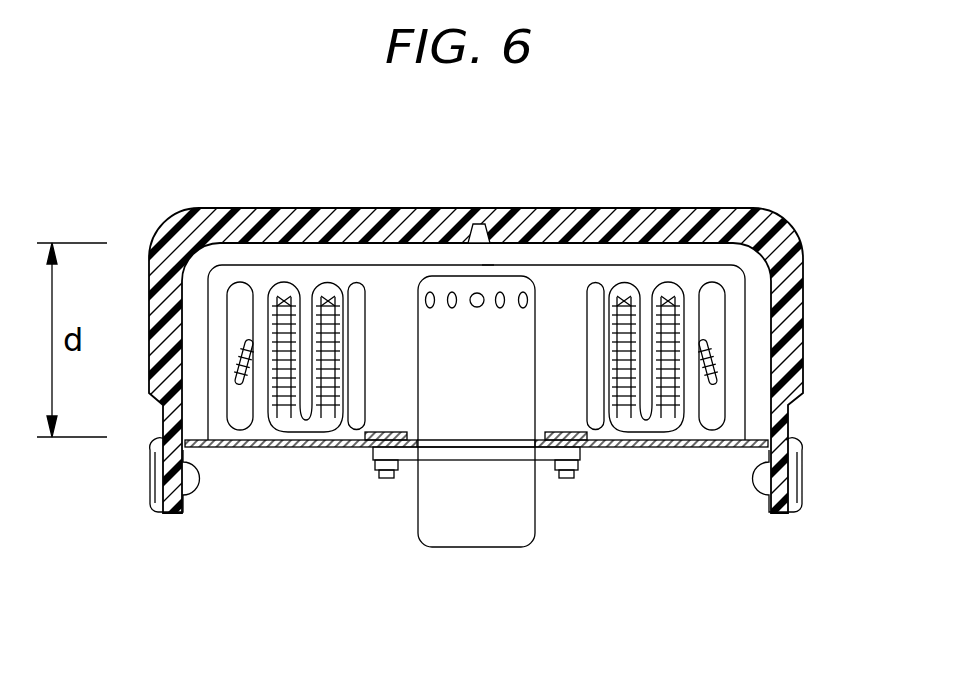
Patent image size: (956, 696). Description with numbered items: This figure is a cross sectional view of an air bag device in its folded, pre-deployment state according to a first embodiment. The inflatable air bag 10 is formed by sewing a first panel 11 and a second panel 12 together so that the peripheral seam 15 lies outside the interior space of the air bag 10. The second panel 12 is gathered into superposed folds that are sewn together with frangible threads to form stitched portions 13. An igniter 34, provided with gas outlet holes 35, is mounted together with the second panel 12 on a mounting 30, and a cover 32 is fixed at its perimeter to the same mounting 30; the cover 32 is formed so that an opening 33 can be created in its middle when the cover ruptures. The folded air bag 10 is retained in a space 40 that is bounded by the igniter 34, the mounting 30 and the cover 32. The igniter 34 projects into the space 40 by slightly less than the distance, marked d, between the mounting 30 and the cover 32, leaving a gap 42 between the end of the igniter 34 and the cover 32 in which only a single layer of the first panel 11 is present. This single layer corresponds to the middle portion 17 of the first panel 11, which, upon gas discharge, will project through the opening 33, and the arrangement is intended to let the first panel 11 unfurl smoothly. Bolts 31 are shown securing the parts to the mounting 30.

The inflatable air bag 10 is at (675, 256).
The first panel 11 is at (718, 268).
The second panel 12 is at (257, 440).
The stitched portions 13 is at (335, 427).
The peripheral seam 15 is at (232, 362).
The middle portion 17 is at (487, 262).
The mounting 30 is at (305, 448).
The bolt 31 is at (388, 480).
The cover 32 is at (572, 212).
The opening 33 is at (478, 222).
The igniter 34 is at (452, 535).
The gas outlet holes 35 is at (477, 308).
The space 40 is at (389, 330).
The gap 42 is at (458, 258).